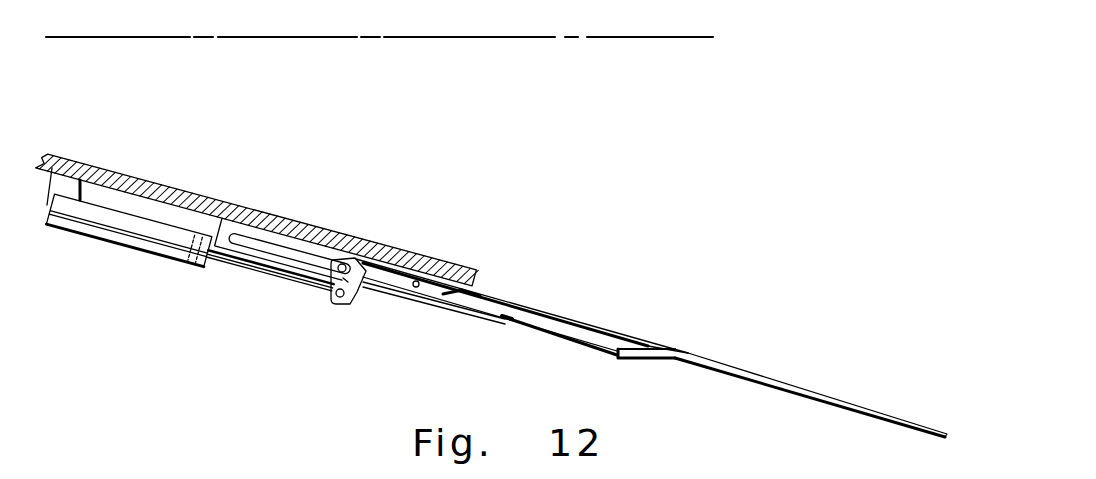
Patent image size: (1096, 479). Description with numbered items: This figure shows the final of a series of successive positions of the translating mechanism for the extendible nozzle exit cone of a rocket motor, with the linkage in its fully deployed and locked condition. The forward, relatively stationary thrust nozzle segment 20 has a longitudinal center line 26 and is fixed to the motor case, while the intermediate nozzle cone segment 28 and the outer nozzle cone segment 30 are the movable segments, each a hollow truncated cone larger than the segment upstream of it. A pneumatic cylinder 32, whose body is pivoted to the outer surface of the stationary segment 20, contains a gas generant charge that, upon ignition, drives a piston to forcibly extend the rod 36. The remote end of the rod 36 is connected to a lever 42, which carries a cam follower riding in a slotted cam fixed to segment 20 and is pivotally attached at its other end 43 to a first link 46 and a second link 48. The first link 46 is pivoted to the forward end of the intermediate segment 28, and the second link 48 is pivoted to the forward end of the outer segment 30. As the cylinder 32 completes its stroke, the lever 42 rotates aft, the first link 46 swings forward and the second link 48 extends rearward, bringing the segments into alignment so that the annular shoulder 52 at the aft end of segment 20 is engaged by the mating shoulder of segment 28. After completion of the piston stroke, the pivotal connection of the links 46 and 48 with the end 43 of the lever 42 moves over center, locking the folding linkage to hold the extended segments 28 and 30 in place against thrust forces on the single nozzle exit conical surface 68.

The thrust nozzle segment 20 is at (191, 198).
The longitudinal center line 26 is at (310, 39).
The intermediate nozzle cone segment 28 is at (570, 312).
The outer nozzle cone segment 30 is at (773, 377).
The pneumatic cylinder 32 is at (108, 217).
The rod 36 is at (248, 273).
The lever 42 is at (402, 298).
The end of lever 43 is at (505, 320).
The first link 46 is at (483, 297).
The second link 48 is at (572, 338).
The annular shoulder 52 is at (441, 285).
The single linear exit cone surface 68 is at (688, 352).